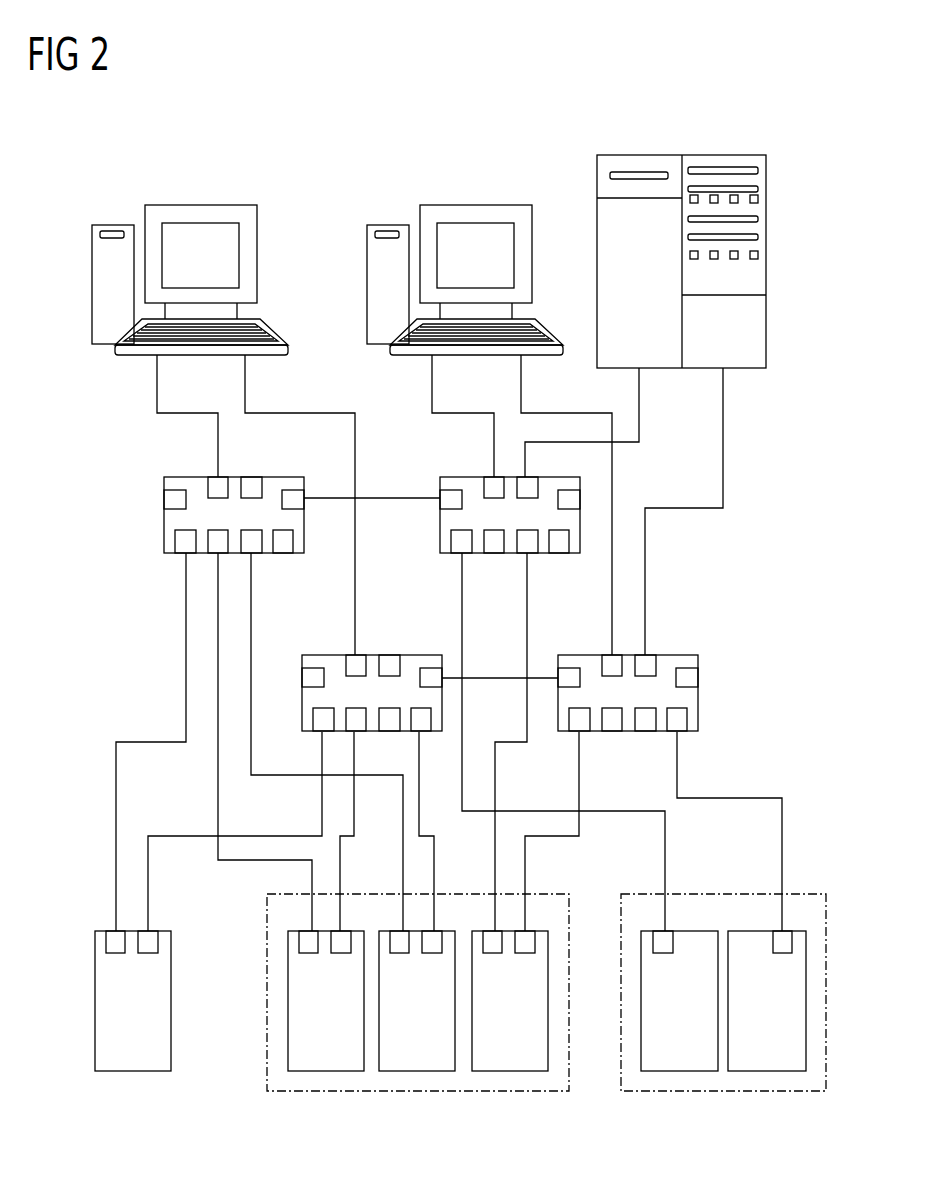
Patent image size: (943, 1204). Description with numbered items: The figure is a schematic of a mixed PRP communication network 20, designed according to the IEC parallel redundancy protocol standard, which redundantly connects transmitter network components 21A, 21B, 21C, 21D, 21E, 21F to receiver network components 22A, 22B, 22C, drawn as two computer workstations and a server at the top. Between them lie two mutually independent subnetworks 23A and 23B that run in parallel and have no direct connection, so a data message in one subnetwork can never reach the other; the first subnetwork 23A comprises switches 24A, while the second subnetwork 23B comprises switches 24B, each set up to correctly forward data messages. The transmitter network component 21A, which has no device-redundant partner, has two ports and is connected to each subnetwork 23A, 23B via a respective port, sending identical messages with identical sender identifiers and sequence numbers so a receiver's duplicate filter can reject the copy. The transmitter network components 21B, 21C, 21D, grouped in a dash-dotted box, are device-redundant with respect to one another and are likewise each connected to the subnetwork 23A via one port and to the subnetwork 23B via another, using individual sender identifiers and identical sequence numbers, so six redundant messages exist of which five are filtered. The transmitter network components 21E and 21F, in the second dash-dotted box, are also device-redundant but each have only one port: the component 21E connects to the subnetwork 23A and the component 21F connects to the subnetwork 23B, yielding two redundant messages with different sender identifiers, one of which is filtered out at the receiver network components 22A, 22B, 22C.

The communication network 20 is at (457, 643).
The transmitter network component 21A is at (128, 1071).
The transmitter network component 21B is at (325, 1071).
The transmitter network component 21C is at (420, 1071).
The transmitter network component 21D is at (512, 1071).
The transmitter network component 21E is at (678, 1071).
The transmitter network component 21F is at (770, 1071).
The receiver network component 22A is at (200, 205).
The receiver network component 22B is at (466, 205).
The receiver network component 22C is at (682, 155).
The first subnetwork 23A is at (133, 657).
The second subnetwork 23B is at (753, 688).
The switches 24A is at (164, 527).
The switches 24B is at (408, 655).